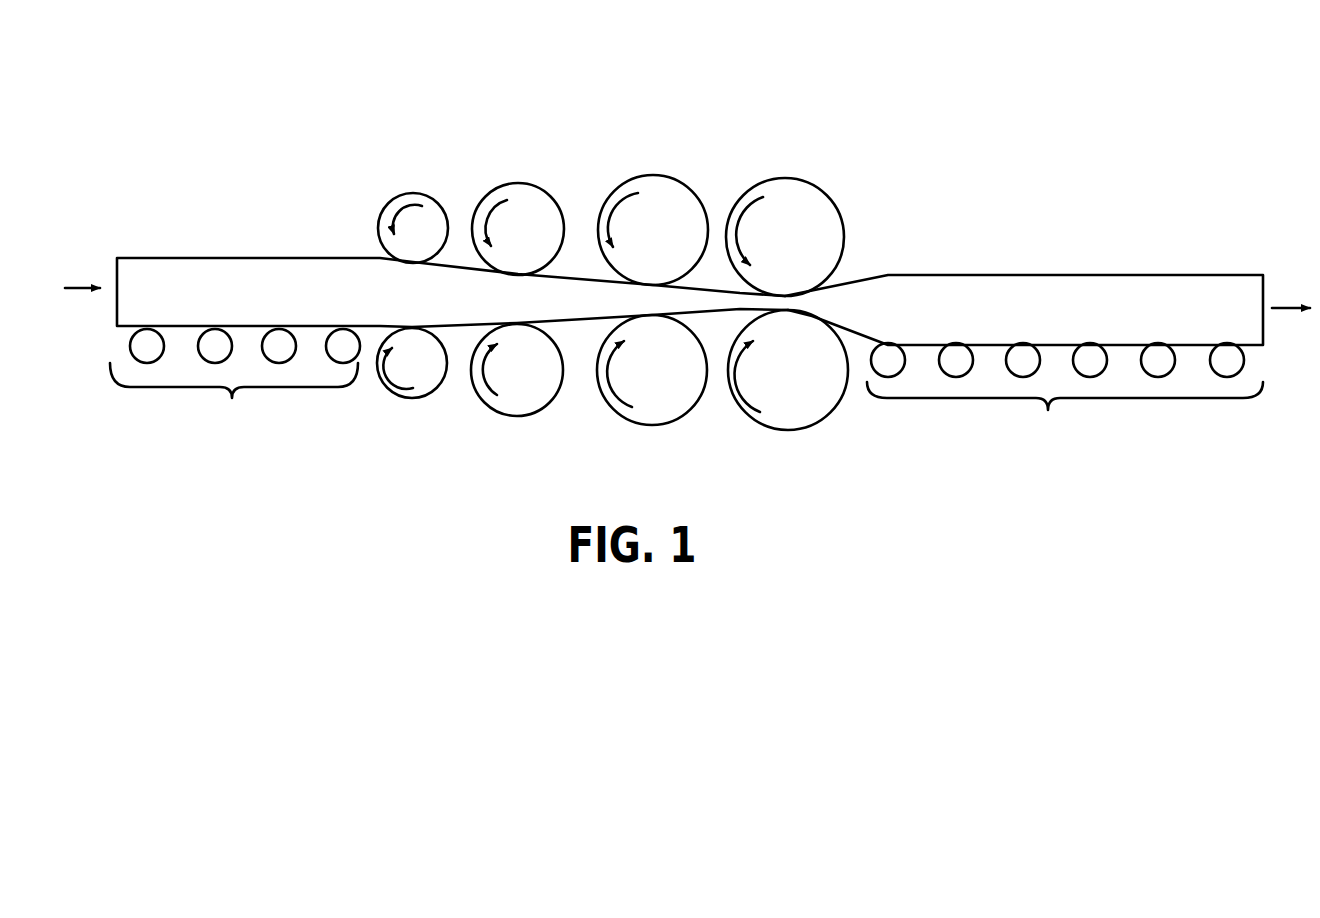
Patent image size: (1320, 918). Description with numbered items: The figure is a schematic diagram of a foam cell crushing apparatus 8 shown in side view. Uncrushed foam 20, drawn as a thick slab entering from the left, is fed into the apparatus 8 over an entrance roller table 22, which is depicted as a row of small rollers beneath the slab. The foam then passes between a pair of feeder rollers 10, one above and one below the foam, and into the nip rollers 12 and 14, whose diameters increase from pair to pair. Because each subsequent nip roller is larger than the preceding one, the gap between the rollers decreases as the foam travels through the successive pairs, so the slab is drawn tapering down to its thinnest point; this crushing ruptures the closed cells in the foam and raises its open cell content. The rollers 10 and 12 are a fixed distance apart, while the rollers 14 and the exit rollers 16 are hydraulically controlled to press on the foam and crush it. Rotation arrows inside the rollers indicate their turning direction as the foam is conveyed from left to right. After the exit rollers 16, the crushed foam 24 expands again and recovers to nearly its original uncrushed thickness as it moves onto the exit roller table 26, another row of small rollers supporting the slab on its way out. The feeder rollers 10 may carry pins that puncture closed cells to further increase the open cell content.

The cell crushing apparatus 8 is at (612, 128).
The feeder rollers 10 is at (421, 195).
The nip rollers 12 is at (518, 182).
The nip rollers 14 is at (660, 173).
The exit rollers 16 is at (805, 177).
The uncrushed foam 20 is at (212, 258).
The entrance roller table 22 is at (235, 381).
The crushed foam 24 is at (908, 272).
The exit roller table 26 is at (1065, 395).